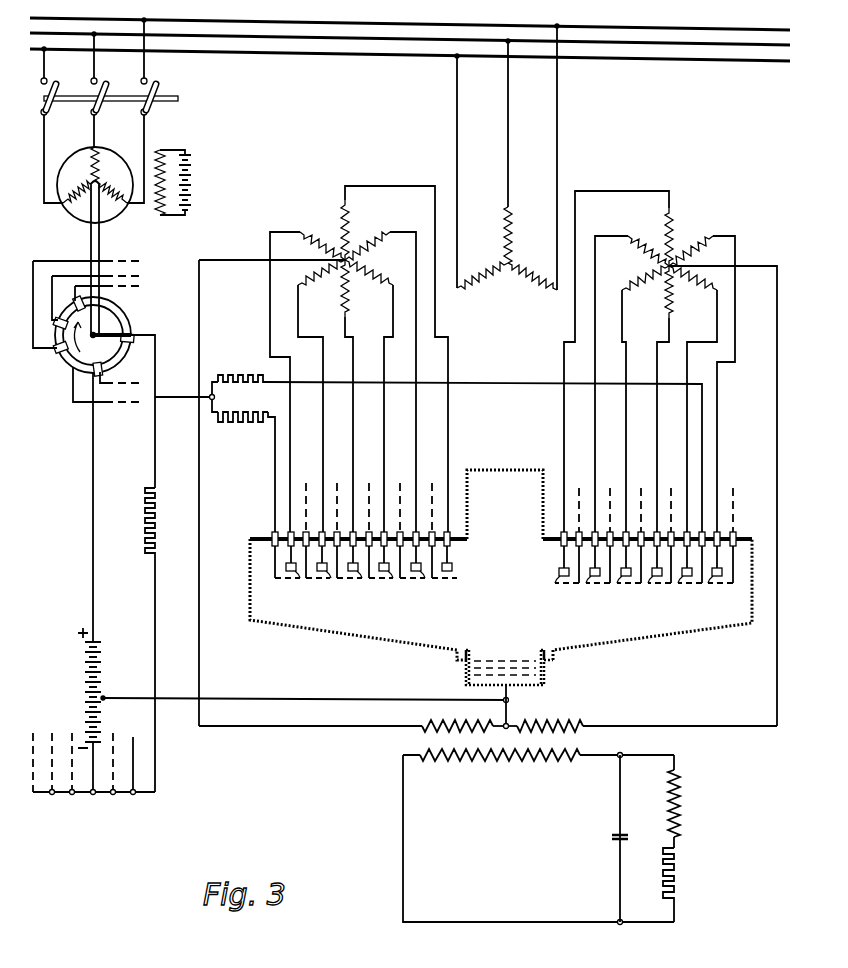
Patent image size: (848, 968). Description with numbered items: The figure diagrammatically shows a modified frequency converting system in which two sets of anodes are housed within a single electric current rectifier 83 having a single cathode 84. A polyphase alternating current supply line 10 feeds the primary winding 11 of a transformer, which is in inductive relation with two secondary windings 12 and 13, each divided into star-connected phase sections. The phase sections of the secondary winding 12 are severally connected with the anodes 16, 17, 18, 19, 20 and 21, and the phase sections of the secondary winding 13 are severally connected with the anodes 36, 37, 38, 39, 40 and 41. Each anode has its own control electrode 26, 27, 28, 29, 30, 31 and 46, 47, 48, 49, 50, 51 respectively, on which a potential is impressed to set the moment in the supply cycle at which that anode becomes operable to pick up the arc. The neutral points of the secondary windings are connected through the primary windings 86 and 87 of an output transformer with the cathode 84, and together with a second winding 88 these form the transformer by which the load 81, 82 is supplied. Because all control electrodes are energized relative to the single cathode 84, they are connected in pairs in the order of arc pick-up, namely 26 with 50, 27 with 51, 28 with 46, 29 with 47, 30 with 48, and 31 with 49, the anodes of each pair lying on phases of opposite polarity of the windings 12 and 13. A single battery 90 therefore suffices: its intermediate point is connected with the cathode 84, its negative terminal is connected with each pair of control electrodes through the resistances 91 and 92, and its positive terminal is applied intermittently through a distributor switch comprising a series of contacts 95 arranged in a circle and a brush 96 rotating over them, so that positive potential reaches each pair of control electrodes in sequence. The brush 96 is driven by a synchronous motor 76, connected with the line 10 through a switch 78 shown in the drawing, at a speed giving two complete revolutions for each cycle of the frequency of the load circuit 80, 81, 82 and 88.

The polyphase alternating current supply line 10 is at (330, 26).
The primary winding 11 is at (515, 315).
The secondary winding 12 is at (377, 315).
The secondary winding 13 is at (702, 318).
The anode 16 is at (292, 574).
The anode 17 is at (325, 574).
The anode 18 is at (357, 574).
The anode 19 is at (389, 574).
The anode 20 is at (421, 574).
The anode 21 is at (453, 571).
The control electrode 26 is at (283, 584).
The control electrode 27 is at (320, 586).
The control electrode 28 is at (351, 586).
The control electrode 29 is at (383, 586).
The control electrode 30 is at (415, 586).
The control electrode 31 is at (452, 585).
The anode 36 is at (559, 572).
The anode 37 is at (591, 578).
The anode 38 is at (623, 578).
The anode 39 is at (656, 578).
The anode 40 is at (689, 578).
The anode 41 is at (718, 578).
The control electrode 46 is at (567, 584).
The control electrode 47 is at (601, 588).
The control electrode 48 is at (636, 588).
The control electrode 49 is at (667, 588).
The control electrode 50 is at (699, 588).
The control electrode 51 is at (733, 585).
The synchronous motor 76 is at (117, 225).
The switch 78 is at (172, 97).
The load circuit element 80 is at (613, 840).
The load 81 is at (688, 805).
The load 82 is at (690, 880).
The rectifier 83 is at (512, 507).
The cathode 84 is at (543, 671).
The primary winding 86 is at (470, 722).
The primary winding 87 is at (556, 721).
The secondary winding 88 is at (527, 760).
The battery 90 is at (87, 695).
The resistance 91 is at (150, 513).
The resistance 92 is at (245, 380).
The contacts 95 is at (67, 358).
The brush 96 is at (112, 336).